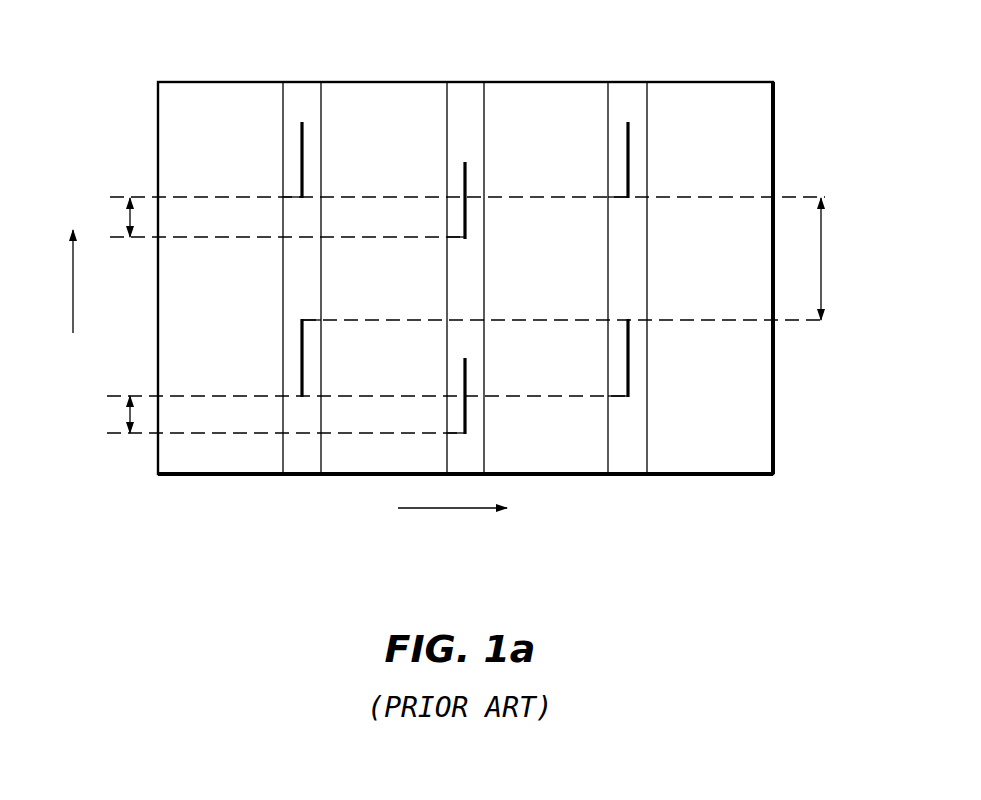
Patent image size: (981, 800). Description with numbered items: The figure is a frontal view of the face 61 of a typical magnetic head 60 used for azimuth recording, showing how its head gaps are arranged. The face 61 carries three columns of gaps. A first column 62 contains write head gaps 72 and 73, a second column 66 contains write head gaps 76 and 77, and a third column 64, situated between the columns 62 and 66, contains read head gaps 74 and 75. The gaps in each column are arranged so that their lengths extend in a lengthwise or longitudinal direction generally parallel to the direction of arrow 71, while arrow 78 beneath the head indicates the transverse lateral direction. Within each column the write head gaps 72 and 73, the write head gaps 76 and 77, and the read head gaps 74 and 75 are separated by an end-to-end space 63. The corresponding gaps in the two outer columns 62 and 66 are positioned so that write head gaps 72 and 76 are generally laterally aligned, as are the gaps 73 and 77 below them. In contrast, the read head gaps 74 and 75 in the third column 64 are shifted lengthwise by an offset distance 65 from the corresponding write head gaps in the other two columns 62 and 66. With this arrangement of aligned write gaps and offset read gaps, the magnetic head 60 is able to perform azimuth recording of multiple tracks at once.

The magnetic head 60 is at (745, 82).
The face 61 is at (720, 460).
The first column 62 is at (625, 82).
The end-to-end space 63 is at (823, 250).
The third column 64 is at (466, 82).
The distance 65 is at (128, 216).
The second column 66 is at (300, 80).
The arrow 71 is at (72, 280).
The write head gap 72 is at (631, 157).
The write head gap 73 is at (631, 375).
The read head gap 74 is at (467, 168).
The read head gap 75 is at (467, 372).
The write head gap 76 is at (305, 147).
The write head gap 77 is at (305, 362).
The arrow 78 is at (448, 510).